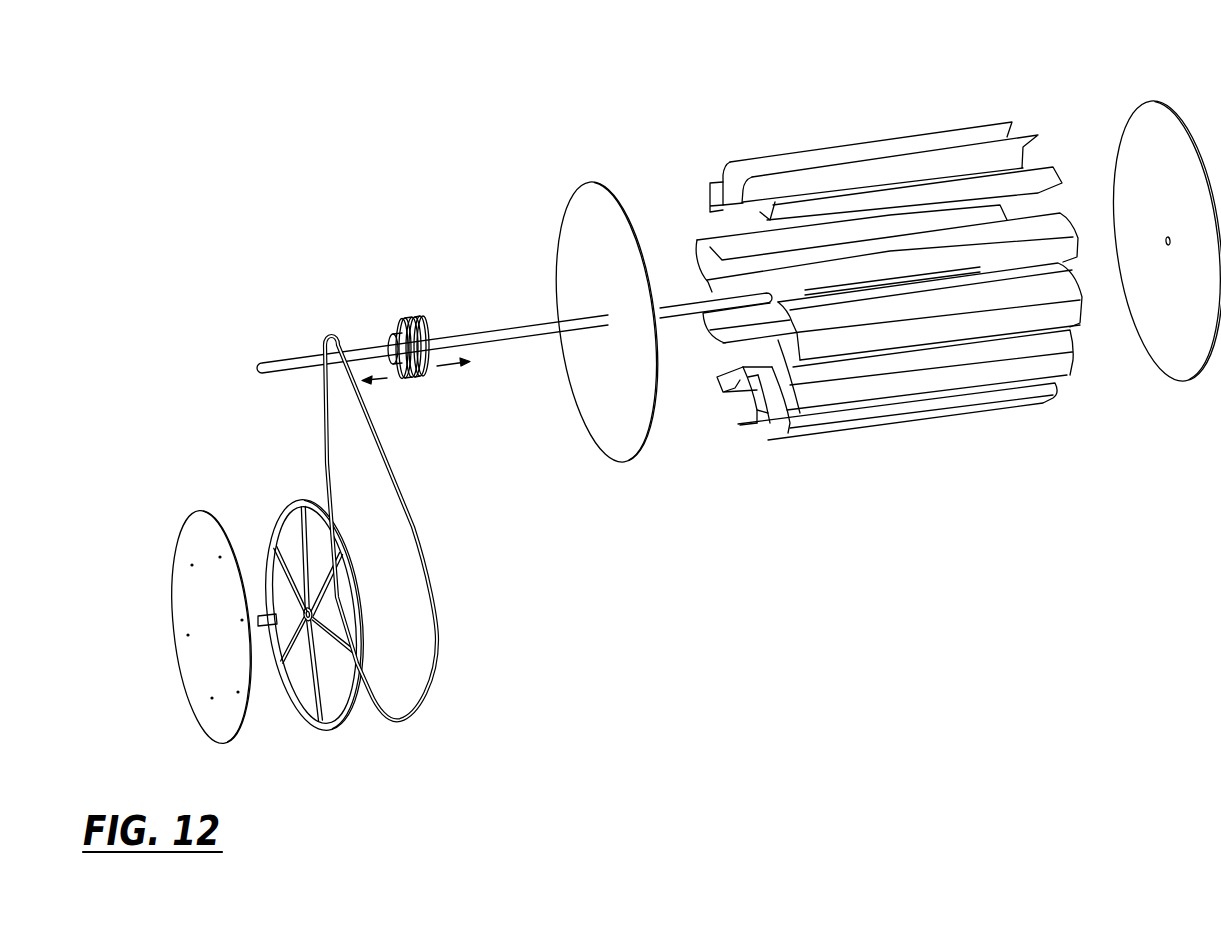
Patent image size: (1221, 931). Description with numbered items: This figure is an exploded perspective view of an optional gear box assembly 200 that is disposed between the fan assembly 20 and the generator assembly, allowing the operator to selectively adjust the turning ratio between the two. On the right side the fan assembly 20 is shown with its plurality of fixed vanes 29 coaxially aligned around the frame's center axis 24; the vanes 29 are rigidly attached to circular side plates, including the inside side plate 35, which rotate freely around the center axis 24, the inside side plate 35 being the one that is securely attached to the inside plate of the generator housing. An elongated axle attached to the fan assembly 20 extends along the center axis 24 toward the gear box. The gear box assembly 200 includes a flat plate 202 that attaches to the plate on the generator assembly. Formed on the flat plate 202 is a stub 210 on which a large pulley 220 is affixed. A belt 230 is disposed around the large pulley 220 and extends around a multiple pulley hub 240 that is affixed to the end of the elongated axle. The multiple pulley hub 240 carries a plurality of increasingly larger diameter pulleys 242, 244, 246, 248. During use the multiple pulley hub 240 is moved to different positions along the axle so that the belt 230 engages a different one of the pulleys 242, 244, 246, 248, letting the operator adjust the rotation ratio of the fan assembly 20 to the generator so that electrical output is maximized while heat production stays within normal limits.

The fan assembly 20 is at (842, 68).
The center axis 24 is at (503, 333).
The fixed vanes 29 is at (797, 157).
The inside side plate 35 is at (567, 205).
The gear box assembly 200 is at (296, 293).
The flat plate 202 is at (193, 510).
The stub 210 is at (260, 627).
The large pulley 220 is at (308, 498).
The belt 230 is at (410, 512).
The multiple pulley hub 240 is at (409, 317).
The pulley 242 is at (392, 331).
The pulley 244 is at (385, 315).
The pulley 246 is at (407, 313).
The pulley 248 is at (413, 313).